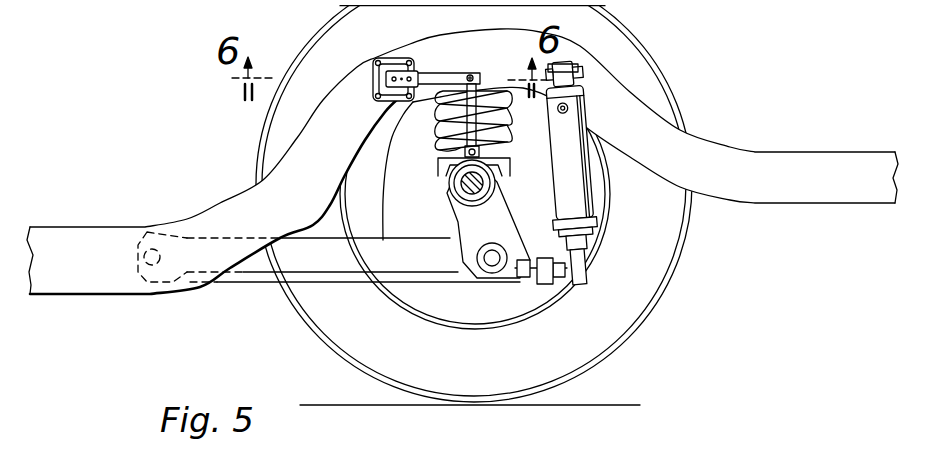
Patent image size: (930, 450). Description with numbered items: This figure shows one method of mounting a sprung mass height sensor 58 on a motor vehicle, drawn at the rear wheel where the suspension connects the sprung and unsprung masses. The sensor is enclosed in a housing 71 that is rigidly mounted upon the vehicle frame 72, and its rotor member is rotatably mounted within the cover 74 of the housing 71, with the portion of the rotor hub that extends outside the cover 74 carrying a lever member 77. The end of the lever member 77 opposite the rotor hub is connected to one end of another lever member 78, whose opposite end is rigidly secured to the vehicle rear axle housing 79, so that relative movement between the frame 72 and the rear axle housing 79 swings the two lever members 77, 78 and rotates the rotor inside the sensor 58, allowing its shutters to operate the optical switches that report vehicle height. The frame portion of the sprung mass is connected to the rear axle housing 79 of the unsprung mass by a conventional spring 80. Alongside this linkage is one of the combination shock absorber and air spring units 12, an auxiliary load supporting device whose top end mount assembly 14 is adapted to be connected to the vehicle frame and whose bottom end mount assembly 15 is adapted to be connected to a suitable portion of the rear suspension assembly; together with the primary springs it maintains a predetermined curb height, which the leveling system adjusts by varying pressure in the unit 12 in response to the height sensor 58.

The combination shock absorber and air spring unit 12 is at (588, 184).
The top end mount assembly 14 is at (569, 67).
The bottom end mount assembly 15 is at (545, 284).
The height sensor 58 is at (432, 59).
The housing 71 is at (372, 90).
The vehicle frame 72 is at (242, 206).
The cover 74 is at (396, 63).
The lever member 77 is at (432, 84).
The lever member 78 is at (503, 132).
The rear axle housing 79 is at (456, 208).
The spring 80 is at (440, 160).